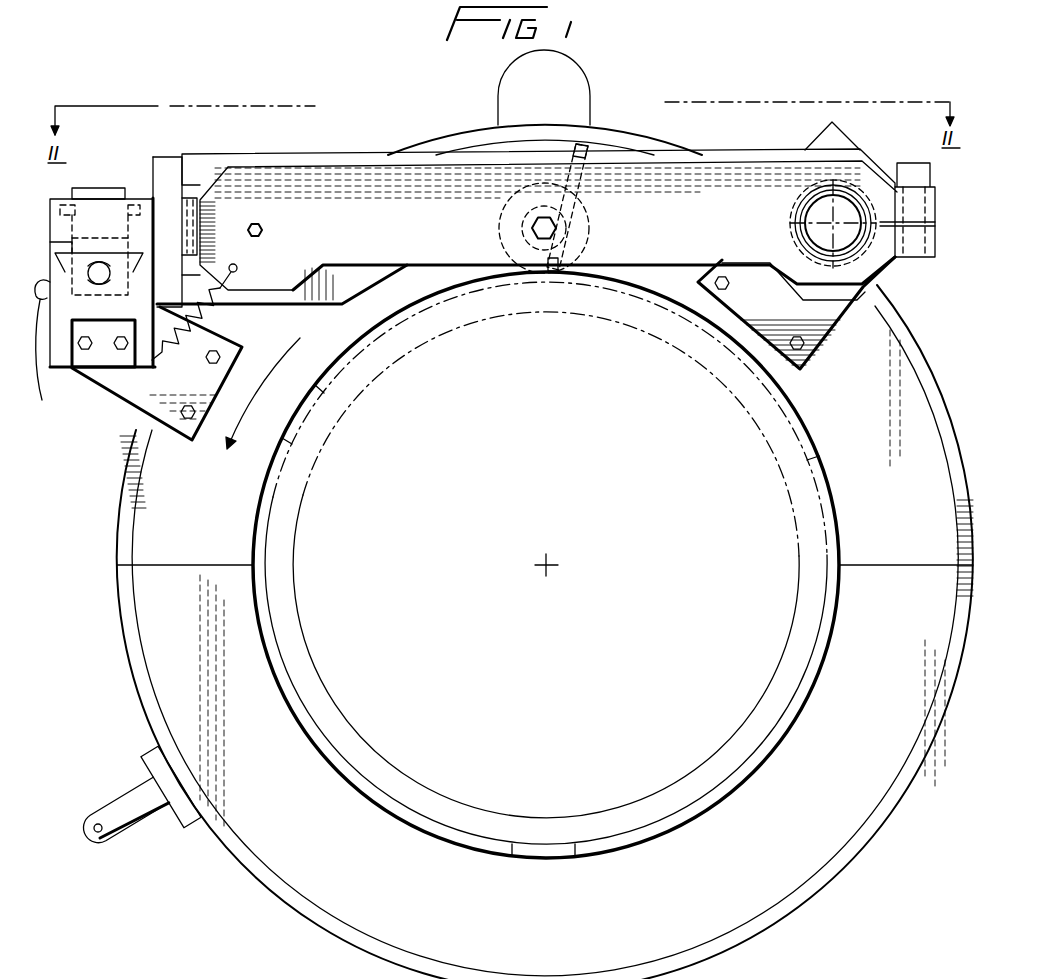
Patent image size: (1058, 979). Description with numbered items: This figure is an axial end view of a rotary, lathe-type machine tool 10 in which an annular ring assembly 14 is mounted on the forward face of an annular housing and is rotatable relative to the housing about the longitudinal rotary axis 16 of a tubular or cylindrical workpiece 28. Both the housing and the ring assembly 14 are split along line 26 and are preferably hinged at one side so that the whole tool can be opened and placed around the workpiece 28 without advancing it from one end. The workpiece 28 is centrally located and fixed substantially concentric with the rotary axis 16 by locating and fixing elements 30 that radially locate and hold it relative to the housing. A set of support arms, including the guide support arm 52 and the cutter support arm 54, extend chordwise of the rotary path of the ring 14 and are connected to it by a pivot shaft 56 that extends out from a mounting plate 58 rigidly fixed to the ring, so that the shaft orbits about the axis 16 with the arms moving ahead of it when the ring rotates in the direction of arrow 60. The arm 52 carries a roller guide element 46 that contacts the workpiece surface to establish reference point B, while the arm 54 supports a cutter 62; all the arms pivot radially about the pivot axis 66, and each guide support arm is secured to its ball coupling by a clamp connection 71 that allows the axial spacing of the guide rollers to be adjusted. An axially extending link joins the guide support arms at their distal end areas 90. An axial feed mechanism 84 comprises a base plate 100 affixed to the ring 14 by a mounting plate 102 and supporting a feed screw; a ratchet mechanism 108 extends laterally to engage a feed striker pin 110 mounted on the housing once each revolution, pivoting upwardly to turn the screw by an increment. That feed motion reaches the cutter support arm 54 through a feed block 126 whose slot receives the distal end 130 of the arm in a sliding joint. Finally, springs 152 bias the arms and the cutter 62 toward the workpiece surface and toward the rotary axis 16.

The rotary, lathe-type machine tool 10 is at (135, 688).
The annular ring assembly 14 is at (235, 535).
The longitudinal rotary axis 16 is at (548, 563).
The split line 26 is at (177, 565).
The tubular or cylindrical workpiece 28 is at (317, 670).
The locating and fixing elements 30 is at (302, 408).
The roller guide element 46 is at (512, 213).
The support arm 52 is at (655, 236).
The cutter support arm 54 is at (343, 157).
The pivot shaft 56 is at (822, 207).
The mounting plate 58 is at (830, 314).
The arrow 60 is at (258, 383).
The cutter 62 is at (551, 274).
The pivot axis 66 is at (830, 226).
The clamp connection 71 is at (935, 243).
The axial feed mechanism 84 is at (112, 181).
The distal end areas 90 is at (238, 180).
The base plate 100 is at (50, 367).
The mounting plate 102 is at (133, 387).
The ratchet mechanism 108 is at (42, 400).
The feed striker pin 110 is at (98, 824).
The feed block 126 is at (45, 207).
The distal end of cutter support arm 130 is at (168, 168).
The springs 152 is at (213, 303).
The reference point B is at (547, 268).